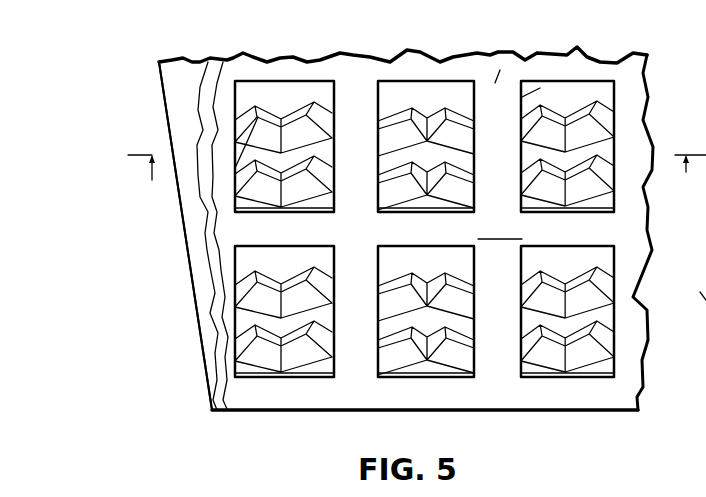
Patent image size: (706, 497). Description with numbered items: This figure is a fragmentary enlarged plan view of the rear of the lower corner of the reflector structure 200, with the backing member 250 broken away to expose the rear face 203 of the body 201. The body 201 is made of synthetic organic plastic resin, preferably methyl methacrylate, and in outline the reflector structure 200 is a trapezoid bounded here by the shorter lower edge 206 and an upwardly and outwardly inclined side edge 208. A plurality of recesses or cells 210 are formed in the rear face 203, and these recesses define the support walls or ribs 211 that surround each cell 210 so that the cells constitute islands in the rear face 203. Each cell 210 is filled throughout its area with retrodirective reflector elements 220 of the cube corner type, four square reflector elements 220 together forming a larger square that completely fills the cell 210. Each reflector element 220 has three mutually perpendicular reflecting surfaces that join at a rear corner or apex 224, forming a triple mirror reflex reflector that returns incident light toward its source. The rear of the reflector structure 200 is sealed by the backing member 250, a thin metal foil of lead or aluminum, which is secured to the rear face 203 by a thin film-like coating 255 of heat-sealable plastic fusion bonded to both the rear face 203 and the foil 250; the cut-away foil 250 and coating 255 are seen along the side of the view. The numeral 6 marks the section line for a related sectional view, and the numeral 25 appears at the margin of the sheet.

The reflector structure 200 is at (306, 54).
The body 201 is at (495, 83).
The rear face 203 is at (500, 229).
The lower edge 206 is at (550, 413).
The side edge 208 is at (162, 117).
The cell 210 is at (273, 96).
The support wall 211 is at (615, 92).
The reflector element 220 is at (240, 100).
The rear corner 224 is at (236, 166).
The backing member 250 is at (192, 267).
The coating 255 is at (218, 288).
The reference element 25 is at (705, 300).
The section line 6- 6 is at (417, 173).